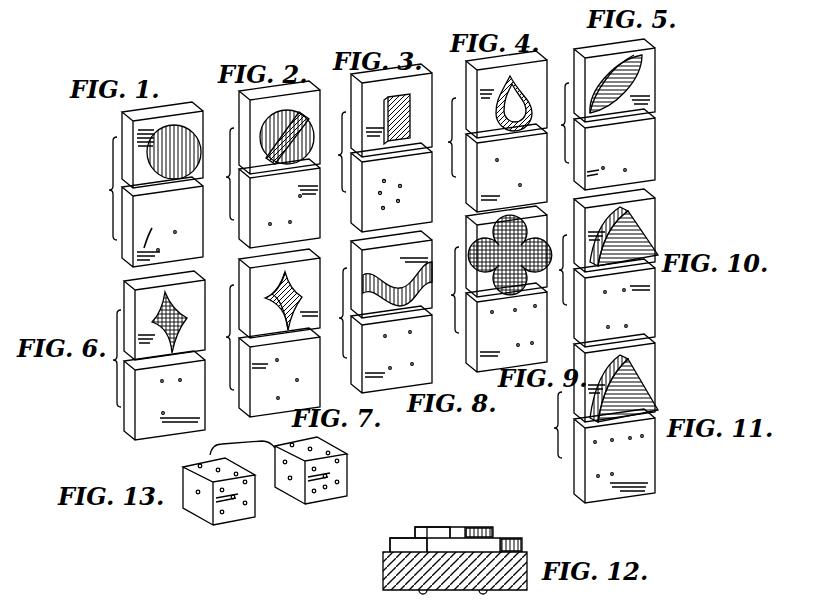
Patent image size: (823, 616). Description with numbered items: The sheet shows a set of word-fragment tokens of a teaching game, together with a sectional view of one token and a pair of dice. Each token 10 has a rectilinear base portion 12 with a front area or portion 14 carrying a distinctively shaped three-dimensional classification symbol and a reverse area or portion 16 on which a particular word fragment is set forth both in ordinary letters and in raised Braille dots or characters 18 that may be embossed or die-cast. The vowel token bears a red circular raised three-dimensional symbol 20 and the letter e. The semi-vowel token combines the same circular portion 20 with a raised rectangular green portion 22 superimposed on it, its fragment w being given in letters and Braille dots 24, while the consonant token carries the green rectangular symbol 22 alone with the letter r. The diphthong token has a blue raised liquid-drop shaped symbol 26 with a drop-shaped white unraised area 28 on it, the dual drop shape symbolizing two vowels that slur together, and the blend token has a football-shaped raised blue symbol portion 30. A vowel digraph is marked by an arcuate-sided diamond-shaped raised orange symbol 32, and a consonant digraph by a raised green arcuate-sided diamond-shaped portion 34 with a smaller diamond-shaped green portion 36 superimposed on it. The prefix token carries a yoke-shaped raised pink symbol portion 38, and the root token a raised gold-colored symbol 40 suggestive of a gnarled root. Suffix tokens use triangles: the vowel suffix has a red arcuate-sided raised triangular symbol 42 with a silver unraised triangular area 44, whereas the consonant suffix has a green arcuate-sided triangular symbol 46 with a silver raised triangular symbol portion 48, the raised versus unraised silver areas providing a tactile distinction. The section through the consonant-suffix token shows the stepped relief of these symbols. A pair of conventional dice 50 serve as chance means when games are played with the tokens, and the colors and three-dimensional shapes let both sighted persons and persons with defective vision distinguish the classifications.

In FIG. 1, the token 10 is at (113, 190).
In FIG. 1, the rectilinear base portion 12 is at (127, 122).
In FIG. 11, the rectilinear base portion 12 is at (550, 455).
In FIG. 1, the front area or portion 14 is at (153, 136).
In FIG. 1, the reverse area or portion 16 is at (140, 210).
In FIG. 2, the reverse area or portion 16 is at (257, 230).
In FIG. 3, the reverse area or portion 16 is at (422, 182).
In FIG. 4, the reverse area or portion 16 is at (480, 180).
In FIG. 5, the reverse area or portion 16 is at (645, 152).
In FIG. 6, the reverse area or portion 16 is at (164, 395).
In FIG. 7, the reverse area or portion 16 is at (279, 372).
In FIG. 8, the reverse area or portion 16 is at (391, 349).
In FIG. 9, the reverse area or portion 16 is at (506, 327).
In FIG. 10, the reverse area or portion 16 is at (614, 303).
In FIG. 11, the reverse area or portion 16 is at (614, 456).
In FIG. 1, the raised Braille dots or characters 18 is at (138, 242).
In FIG. 1, the circular raised three-dimensional symbol 20 is at (159, 150).
In FIG. 2, the circular raised three-dimensional symbol 20 is at (287, 110).
In FIG. 2, the raised rectangular green portion 22 is at (266, 116).
In FIG. 3, the raised rectangular green portion 22 is at (413, 105).
In FIG. 2, the raised Braille dots 24 is at (297, 196).
In FIG. 4, the liquid-drop shaped symbol 26 is at (510, 80).
In FIG. 4, the drop-shaped white unraised area 28 is at (515, 102).
In FIG. 5, the semi-elliptical raised blue symbol portion 30 is at (630, 80).
In FIG. 6, the arcuate-sided diamond-shaped raised orange symbol 32 is at (163, 303).
In FIG. 7, the raised green arcuate-sided diamond-shaped portion 34 is at (280, 280).
In FIG. 7, the smaller diamond-shaped green portion 36 is at (275, 308).
In FIG. 8, the yoke-shaped raised pink symbol portion 38 is at (372, 268).
In FIG. 9, the raised gold-colored symbol 40 is at (488, 247).
In FIG. 10, the red arcuate-sided raised triangular symbol 42 is at (625, 222).
In FIG. 10, the silver unraised triangular area 44 is at (640, 250).
In FIG. 11, the green arcuate-sided triangular symbol 46 is at (630, 368).
In FIG. 12, the green arcuate-sided triangular symbol 46 is at (398, 545).
In FIG. 11, the silver raised triangular symbol portion 48 is at (638, 394).
In FIG. 12, the silver raised triangular symbol portion 48 is at (430, 530).
In FIG. 13, the dice 50 is at (244, 517).